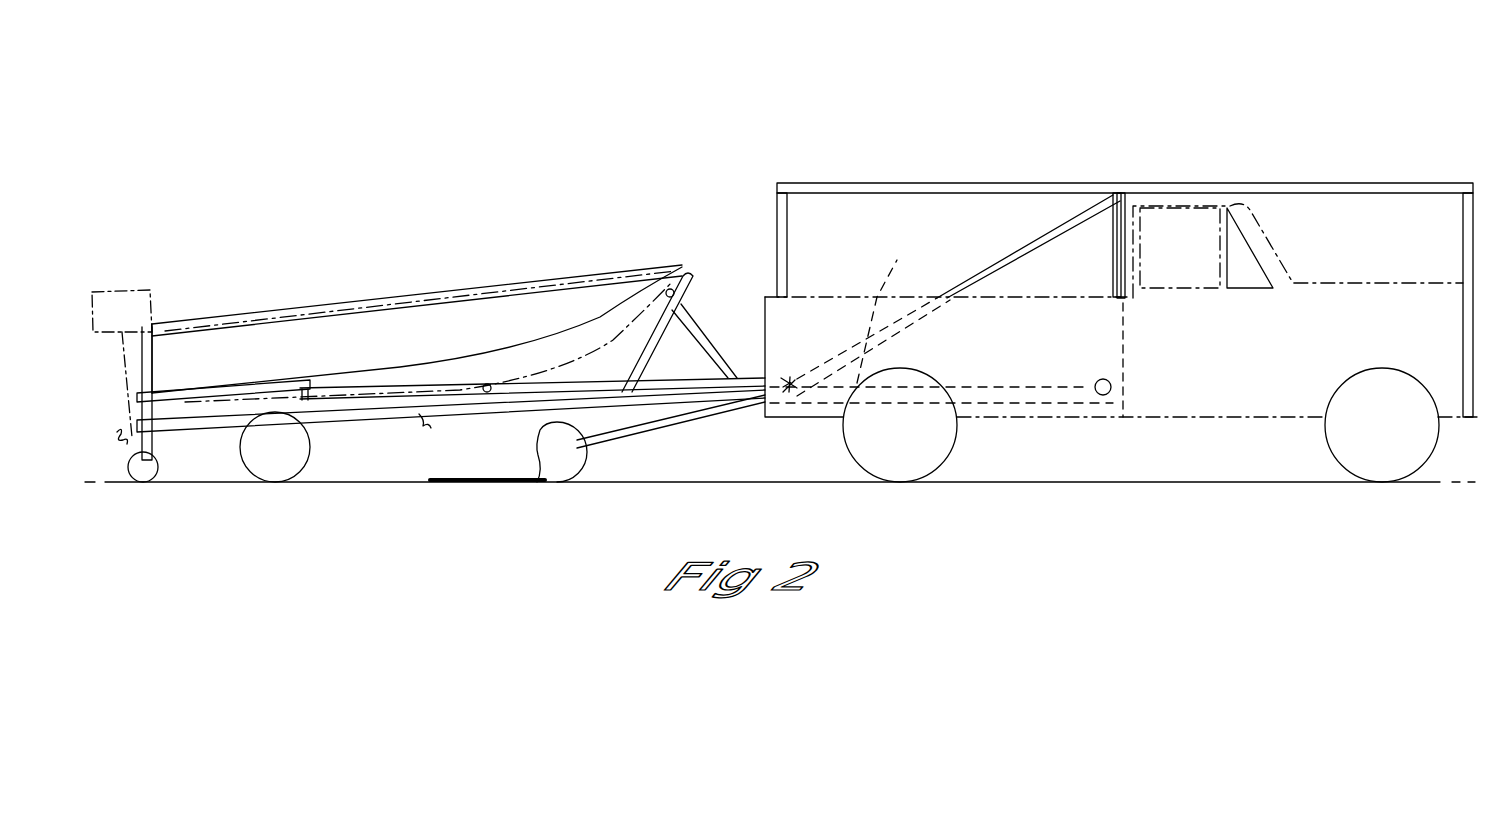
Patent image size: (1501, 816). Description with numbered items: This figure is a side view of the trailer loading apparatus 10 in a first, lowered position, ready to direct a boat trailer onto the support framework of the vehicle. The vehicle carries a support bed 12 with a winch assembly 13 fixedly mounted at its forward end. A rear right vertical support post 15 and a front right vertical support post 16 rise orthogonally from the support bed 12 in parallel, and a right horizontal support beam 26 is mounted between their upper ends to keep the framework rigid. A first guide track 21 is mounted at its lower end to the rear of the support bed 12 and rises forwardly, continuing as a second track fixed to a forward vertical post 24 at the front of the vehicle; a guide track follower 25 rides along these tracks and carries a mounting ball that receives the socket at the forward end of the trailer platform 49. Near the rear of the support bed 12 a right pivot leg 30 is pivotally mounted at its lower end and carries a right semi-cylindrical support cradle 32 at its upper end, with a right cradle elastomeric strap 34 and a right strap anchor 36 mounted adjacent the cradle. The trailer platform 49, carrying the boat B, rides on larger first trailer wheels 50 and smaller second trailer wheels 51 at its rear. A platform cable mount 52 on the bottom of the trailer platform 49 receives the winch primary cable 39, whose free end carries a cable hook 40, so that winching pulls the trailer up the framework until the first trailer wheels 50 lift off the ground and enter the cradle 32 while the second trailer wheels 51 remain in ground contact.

The trailer loading apparatus 10 is at (1062, 106).
The support bed 12 is at (866, 313).
The winch assembly 13 is at (1097, 379).
The rear right vertical support post 15 is at (786, 240).
The front right vertical support post 16 is at (1110, 266).
The first guide track 21 is at (1024, 258).
The forward vertical post 24 is at (1460, 232).
The guide track follower 25 is at (794, 377).
The right horizontal support beam 26 is at (896, 196).
The right pivot leg 30 is at (673, 418).
The right semi-cylindrical support cradle 32 is at (570, 452).
The right cradle elastomeric strap 34 is at (482, 470).
The right strap anchor 36 is at (612, 420).
The winch primary cable 39 is at (1013, 380).
The cable hook 40 is at (418, 420).
The trailer platform 49 is at (386, 405).
The first trailer wheel 50 is at (242, 452).
The second trailer wheels 51 is at (147, 482).
The platform cable mount 52 is at (420, 420).
The boat B is at (504, 308).